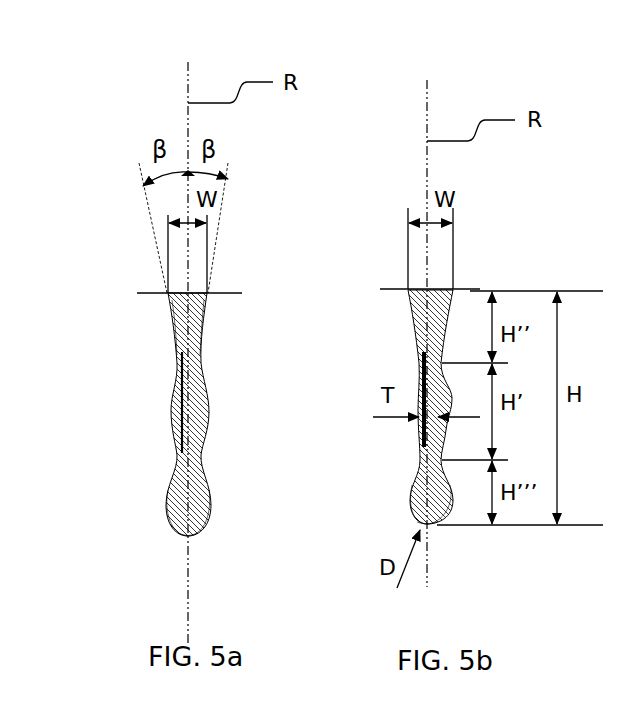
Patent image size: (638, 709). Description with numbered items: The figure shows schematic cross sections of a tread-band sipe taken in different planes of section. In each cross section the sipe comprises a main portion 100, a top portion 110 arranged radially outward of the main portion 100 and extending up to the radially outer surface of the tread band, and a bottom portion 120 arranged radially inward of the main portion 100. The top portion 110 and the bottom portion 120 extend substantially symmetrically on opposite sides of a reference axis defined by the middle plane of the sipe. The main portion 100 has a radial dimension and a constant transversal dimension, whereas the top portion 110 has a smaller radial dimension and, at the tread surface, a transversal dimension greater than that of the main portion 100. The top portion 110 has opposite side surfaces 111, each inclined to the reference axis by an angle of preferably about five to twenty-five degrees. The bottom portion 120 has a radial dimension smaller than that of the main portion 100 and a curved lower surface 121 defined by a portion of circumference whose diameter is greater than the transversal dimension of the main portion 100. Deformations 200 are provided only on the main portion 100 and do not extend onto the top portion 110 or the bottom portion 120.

In FIG. 5a, the main portion 100 is at (152, 400).
In FIG. 5b, the main portion 100 is at (390, 430).
In FIG. 5a, the top portion 110 is at (159, 323).
In FIG. 5b, the top portion 110 is at (404, 315).
In FIG. 5a, the side surfaces 111 is at (175, 337).
In FIG. 5a, the bottom portion 120 is at (158, 517).
In FIG. 5b, the bottom portion 120 is at (397, 516).
In FIG. 5a, the lower surface 121 is at (200, 537).
In FIG. 5b, the lower surface 121 is at (437, 523).
In FIG. 5a, the deformations 200 is at (175, 418).
In FIG. 5b, the deformations 200 is at (413, 390).